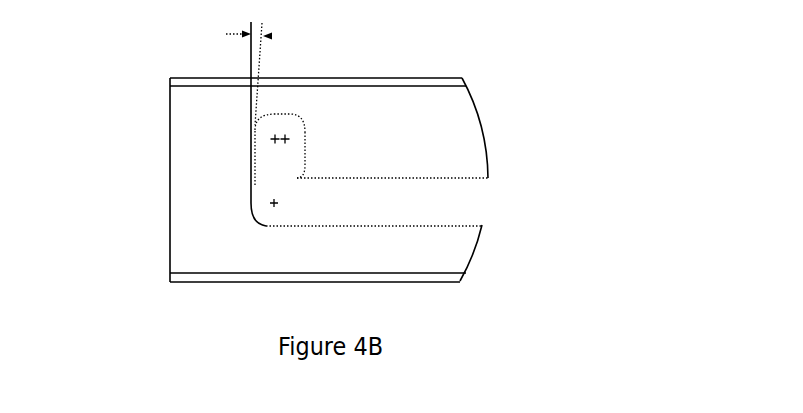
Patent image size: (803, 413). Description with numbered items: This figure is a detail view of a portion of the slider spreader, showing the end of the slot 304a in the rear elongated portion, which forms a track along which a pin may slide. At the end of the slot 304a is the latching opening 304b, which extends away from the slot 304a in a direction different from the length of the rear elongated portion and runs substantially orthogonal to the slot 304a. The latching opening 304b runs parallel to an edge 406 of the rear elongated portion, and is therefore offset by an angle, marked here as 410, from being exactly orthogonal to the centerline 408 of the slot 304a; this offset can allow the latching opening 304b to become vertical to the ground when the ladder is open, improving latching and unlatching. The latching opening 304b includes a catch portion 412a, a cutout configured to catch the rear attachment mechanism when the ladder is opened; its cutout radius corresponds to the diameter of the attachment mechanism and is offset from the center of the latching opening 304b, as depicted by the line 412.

The edge 406 is at (170, 198).
The reference axis line 408 is at (248, 180).
The angle Φ of slot inclination 410 is at (272, 36).
The line 412 is at (305, 114).
The catch portion 412a is at (302, 143).
The latching opening 304b is at (280, 150).
The slot 304a is at (470, 199).